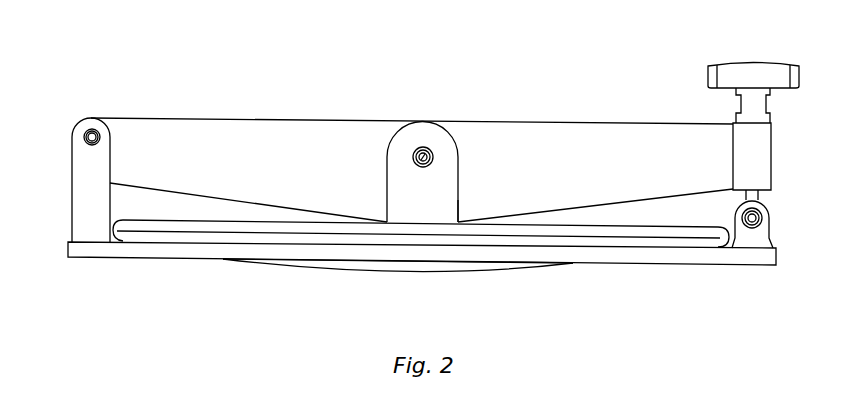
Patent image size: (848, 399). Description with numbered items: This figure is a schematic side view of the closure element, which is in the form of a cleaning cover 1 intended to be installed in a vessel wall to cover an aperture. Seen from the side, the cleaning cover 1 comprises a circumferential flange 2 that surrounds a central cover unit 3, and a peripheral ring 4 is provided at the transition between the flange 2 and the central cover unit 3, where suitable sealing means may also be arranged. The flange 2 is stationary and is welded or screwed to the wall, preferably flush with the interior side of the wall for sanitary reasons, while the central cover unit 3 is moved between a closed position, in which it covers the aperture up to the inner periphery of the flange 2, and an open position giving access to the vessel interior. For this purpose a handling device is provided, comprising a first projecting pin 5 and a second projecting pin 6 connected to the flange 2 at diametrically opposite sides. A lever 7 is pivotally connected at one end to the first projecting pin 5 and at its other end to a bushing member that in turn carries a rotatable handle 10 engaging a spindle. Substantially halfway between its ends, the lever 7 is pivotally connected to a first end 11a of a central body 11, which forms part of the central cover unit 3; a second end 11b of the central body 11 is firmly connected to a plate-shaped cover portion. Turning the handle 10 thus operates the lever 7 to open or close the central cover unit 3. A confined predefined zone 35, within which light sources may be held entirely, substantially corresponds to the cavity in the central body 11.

The cleaning cover 1 is at (86, 95).
The circumferential flange 2 is at (148, 254).
The central cover unit 3 is at (398, 300).
The peripheral ring 4 is at (636, 236).
The first projecting pin 5 is at (90, 213).
The second projecting pin 6 is at (762, 237).
The lever 7 is at (286, 140).
The rotatable handle 10 is at (738, 82).
The central body 11 is at (455, 157).
The first end of the central body 11a is at (427, 155).
The second end of the central body 11b is at (456, 220).
The confined predefined zone 35 is at (417, 275).